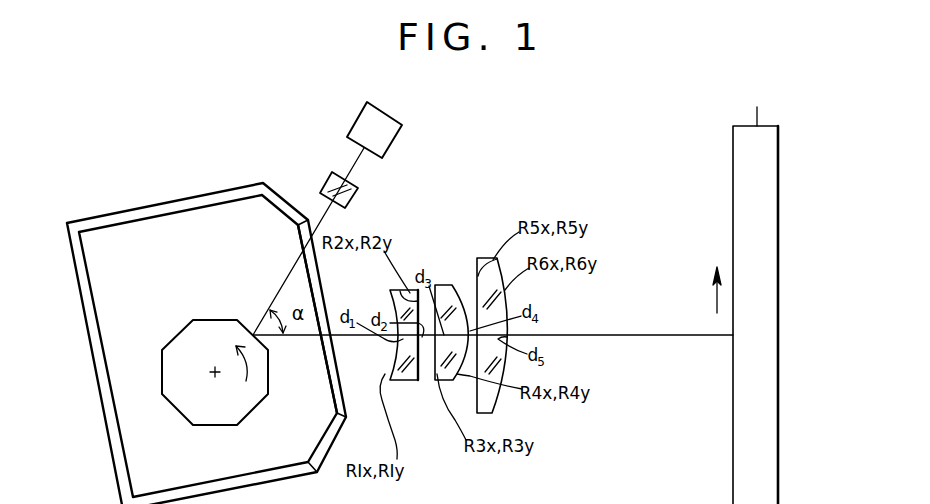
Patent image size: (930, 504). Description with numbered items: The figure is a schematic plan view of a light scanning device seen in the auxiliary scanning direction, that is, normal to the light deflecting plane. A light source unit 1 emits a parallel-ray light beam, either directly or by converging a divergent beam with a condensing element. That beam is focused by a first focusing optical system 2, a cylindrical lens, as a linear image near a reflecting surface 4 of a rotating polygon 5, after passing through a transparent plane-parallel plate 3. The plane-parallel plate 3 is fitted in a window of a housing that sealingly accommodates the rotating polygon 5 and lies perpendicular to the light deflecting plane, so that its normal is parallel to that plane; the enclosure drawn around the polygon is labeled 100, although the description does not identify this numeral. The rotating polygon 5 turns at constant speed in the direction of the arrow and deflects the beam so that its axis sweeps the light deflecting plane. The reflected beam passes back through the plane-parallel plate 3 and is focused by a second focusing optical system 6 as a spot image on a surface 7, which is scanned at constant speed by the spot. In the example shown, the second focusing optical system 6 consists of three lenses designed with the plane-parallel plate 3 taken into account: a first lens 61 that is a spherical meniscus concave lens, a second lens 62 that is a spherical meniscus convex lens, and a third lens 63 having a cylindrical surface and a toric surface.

The housing 100 is at (157, 207).
The light source unit 1 is at (394, 141).
The first focusing optical system 2 is at (353, 196).
The plane-parallel plate 3 is at (320, 268).
The reflecting surface 4 is at (245, 326).
The rotating polygon 5 is at (212, 418).
The second focusing optical system 6 is at (441, 333).
The first lens 61 is at (410, 290).
The second lens 62 is at (443, 285).
The third lens 63 is at (487, 258).
The surface 7 is at (742, 180).